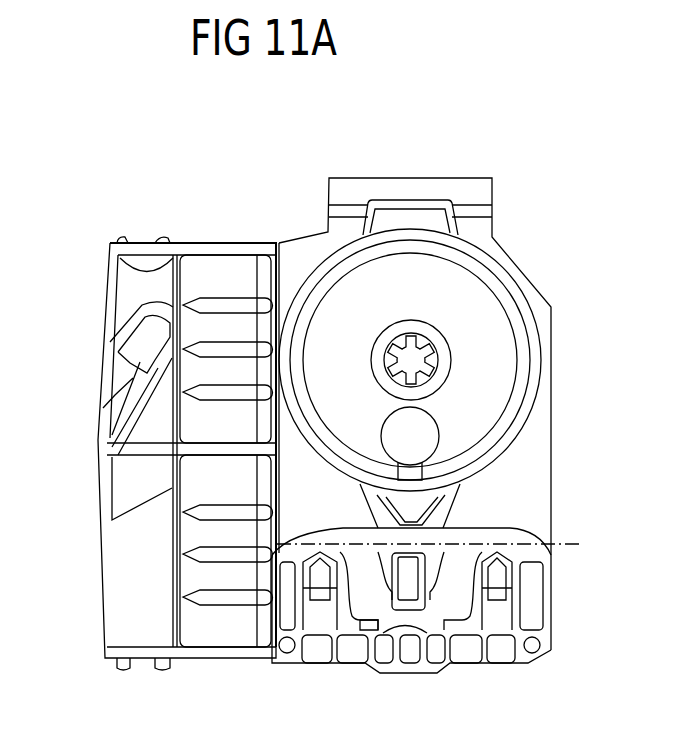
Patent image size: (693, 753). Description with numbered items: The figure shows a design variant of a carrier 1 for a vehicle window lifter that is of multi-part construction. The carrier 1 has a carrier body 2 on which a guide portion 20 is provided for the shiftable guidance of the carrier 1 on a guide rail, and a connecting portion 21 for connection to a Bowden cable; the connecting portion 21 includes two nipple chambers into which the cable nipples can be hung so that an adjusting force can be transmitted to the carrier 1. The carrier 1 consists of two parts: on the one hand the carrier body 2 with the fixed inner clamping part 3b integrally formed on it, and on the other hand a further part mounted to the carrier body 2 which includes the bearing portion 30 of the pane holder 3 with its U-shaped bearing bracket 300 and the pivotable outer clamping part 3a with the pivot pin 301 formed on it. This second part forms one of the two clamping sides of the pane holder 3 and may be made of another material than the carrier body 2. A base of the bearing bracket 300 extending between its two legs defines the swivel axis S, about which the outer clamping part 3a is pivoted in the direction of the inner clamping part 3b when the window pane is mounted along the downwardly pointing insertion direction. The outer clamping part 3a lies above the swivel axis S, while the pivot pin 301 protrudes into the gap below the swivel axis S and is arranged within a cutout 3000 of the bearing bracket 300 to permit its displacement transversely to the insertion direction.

The carrier 1 is at (560, 186).
The carrier body 2 is at (103, 236).
The guide portion 20 is at (163, 238).
The connecting portion 21 is at (127, 498).
The pane holder 3 is at (523, 275).
The outer clamping part 3a is at (505, 372).
The inner clamping part 3b is at (338, 183).
The bearing portion 30 is at (538, 529).
The bearing bracket 300 is at (292, 532).
The cutout 3000 is at (370, 592).
The pivot pin 301 is at (413, 590).
The swivel axis S is at (563, 545).